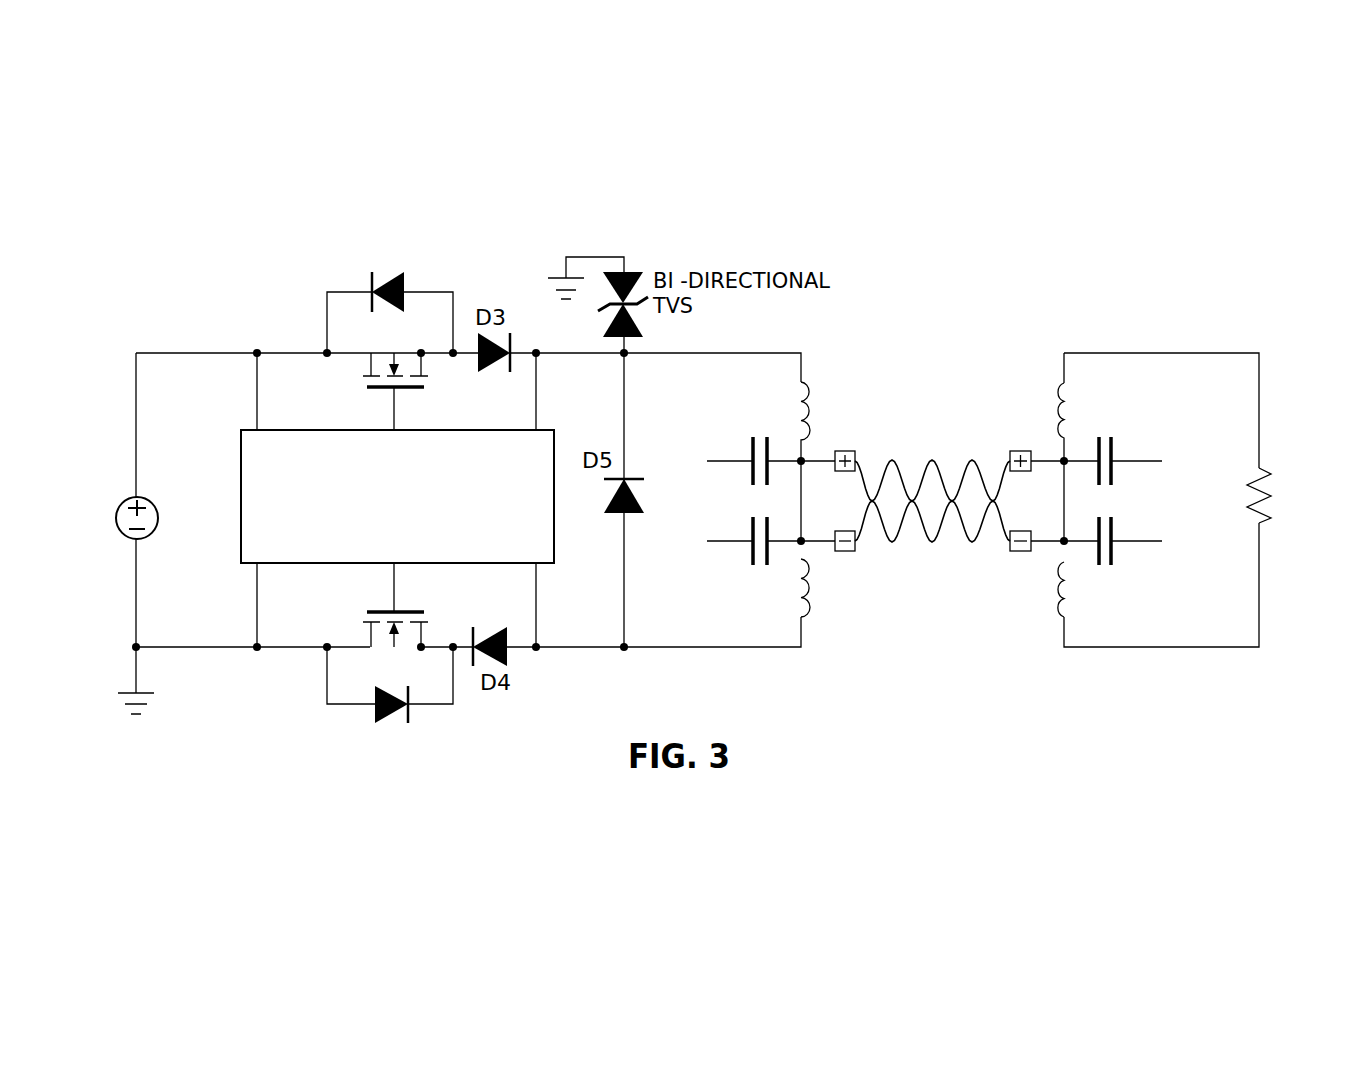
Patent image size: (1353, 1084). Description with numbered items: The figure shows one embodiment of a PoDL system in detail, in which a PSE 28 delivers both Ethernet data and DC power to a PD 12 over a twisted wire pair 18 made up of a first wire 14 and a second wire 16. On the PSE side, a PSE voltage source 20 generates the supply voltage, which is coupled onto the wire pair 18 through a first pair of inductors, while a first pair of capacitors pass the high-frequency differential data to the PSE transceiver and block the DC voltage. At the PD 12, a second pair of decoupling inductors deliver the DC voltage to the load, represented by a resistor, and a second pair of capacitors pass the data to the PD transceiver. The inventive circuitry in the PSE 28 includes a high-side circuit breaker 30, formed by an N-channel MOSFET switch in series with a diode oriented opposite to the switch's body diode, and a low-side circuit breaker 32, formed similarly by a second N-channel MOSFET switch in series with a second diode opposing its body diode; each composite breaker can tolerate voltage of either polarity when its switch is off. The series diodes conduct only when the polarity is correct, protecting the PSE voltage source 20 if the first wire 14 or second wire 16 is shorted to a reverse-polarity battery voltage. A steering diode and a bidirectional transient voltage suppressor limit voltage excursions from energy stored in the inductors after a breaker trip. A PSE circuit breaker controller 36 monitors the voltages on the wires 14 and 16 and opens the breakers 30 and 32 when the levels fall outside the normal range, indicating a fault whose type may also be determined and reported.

The PD 12 is at (1066, 336).
The first wire 14 is at (860, 465).
The second wire 16 is at (860, 545).
The twisted wire pair 18 is at (958, 424).
The PSE voltage source 20 is at (158, 518).
The PSE 28 is at (884, 381).
The high-side circuit breaker 30 is at (295, 299).
The low-side circuit breaker 32 is at (299, 682).
The PSE circuit breaker controller 36 is at (241, 452).